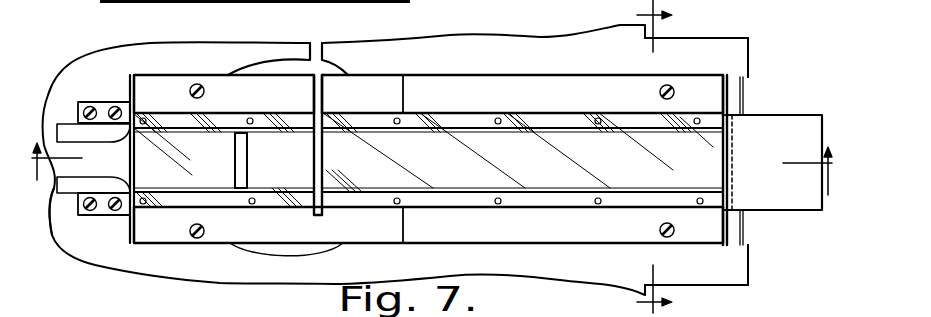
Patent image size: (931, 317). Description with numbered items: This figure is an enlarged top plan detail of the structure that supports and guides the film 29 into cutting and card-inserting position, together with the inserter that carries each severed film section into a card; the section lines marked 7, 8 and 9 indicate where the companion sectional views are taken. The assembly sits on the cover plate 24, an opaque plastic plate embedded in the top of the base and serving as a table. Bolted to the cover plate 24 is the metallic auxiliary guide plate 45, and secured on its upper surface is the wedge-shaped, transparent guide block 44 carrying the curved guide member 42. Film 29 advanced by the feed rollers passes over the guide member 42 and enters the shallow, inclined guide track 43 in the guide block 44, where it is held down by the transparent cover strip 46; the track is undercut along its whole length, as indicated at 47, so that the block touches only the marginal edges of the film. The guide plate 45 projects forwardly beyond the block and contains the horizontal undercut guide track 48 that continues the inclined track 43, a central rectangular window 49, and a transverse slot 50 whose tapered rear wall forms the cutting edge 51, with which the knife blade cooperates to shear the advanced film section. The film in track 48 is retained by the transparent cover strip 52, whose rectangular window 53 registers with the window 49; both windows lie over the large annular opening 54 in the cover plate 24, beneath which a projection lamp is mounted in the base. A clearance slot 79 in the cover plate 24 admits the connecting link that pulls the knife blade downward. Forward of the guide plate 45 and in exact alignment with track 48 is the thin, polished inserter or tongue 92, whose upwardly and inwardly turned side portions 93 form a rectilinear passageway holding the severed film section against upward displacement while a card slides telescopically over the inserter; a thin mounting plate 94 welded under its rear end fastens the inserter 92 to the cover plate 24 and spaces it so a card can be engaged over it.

The cover plate 24 is at (708, 47).
The curved guide member 42 is at (787, 127).
The guide track 43 is at (518, 136).
The guide block 44 is at (487, 87).
The auxiliary guide plate 45 is at (165, 225).
The cover strip 46 is at (633, 125).
The undercut 47 is at (424, 135).
The guide track 48 is at (170, 137).
The window 49 is at (248, 153).
The slot 50 is at (316, 100).
The cutting edge 51 is at (318, 160).
The cover strip 52 is at (223, 122).
The window 53 is at (285, 183).
The annular opening 54 is at (248, 70).
The clearance slot 79 is at (323, 53).
The inserter 92 is at (53, 183).
The upwardly and inwardly turned portions 93 is at (70, 135).
The mounting plate 94 is at (102, 108).
The section line 7- 7 is at (654, 26).
The section line 8- 8 is at (432, 176).
The section line 9- 9 is at (654, 291).
The film 29 is at (764, 312).